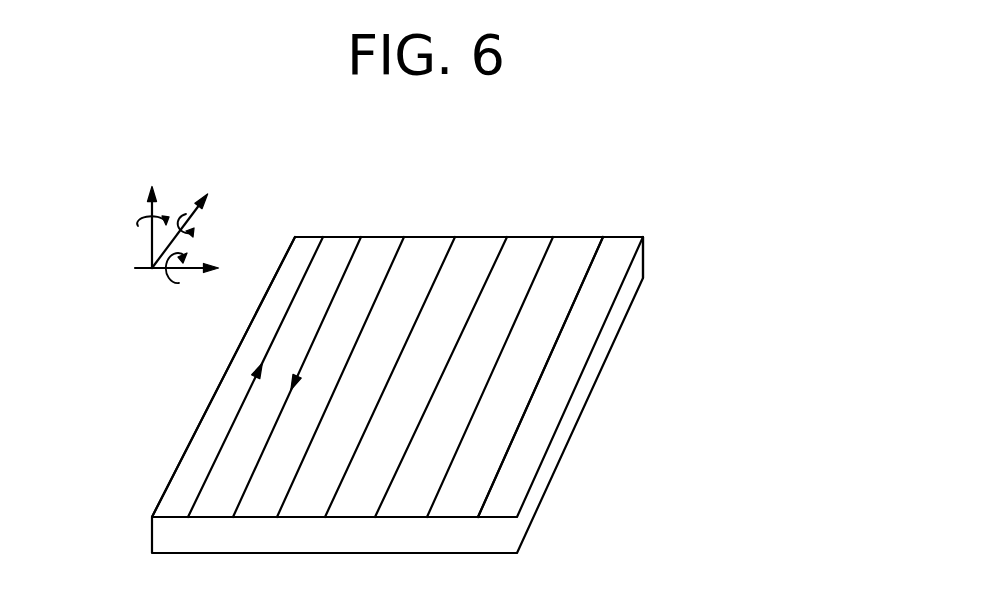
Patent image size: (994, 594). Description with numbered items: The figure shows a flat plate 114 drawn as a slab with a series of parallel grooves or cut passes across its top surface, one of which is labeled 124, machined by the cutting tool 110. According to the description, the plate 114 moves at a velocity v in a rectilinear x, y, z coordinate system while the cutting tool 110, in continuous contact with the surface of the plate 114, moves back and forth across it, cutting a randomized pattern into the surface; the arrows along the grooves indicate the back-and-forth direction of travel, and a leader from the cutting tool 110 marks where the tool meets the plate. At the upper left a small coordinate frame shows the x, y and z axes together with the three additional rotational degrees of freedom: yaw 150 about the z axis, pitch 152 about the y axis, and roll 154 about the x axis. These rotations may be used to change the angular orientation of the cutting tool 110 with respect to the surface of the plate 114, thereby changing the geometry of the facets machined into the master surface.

The cutting tool 110 is at (388, 370).
The flat plate 114 is at (639, 237).
The stripe / scan line 124 is at (538, 380).
The yaw 150 is at (147, 226).
The pitch 152 is at (197, 228).
The roll 154 is at (160, 280).